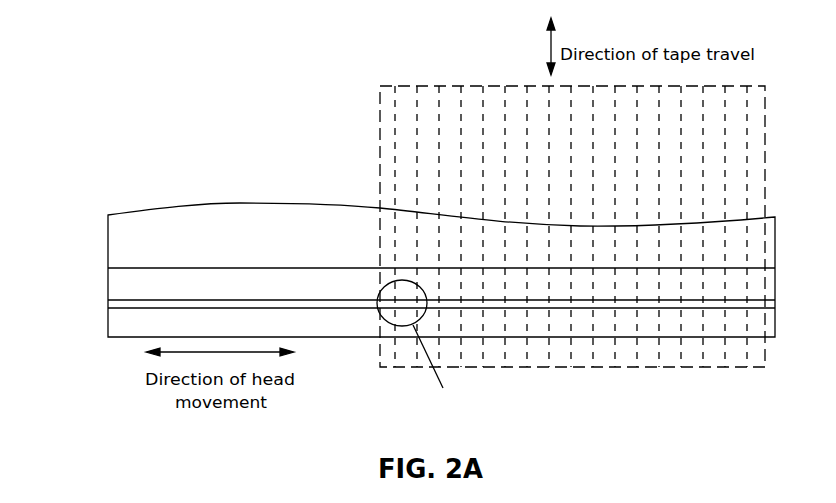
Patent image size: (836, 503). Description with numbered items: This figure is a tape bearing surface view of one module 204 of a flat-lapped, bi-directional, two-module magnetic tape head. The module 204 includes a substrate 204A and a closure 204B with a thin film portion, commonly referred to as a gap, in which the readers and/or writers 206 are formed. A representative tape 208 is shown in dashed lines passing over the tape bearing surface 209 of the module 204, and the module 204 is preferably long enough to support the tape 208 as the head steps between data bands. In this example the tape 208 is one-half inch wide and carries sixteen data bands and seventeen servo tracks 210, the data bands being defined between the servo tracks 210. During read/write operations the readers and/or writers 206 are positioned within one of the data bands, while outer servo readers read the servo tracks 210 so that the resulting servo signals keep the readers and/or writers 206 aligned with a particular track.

The module 204 is at (147, 192).
The substrate 204A is at (234, 203).
The closure 204B is at (108, 322).
The readers and/or writers 206 is at (382, 303).
The tape 208 is at (380, 92).
The tape bearing surface 209 is at (292, 288).
The servo tracks 210 is at (483, 164).